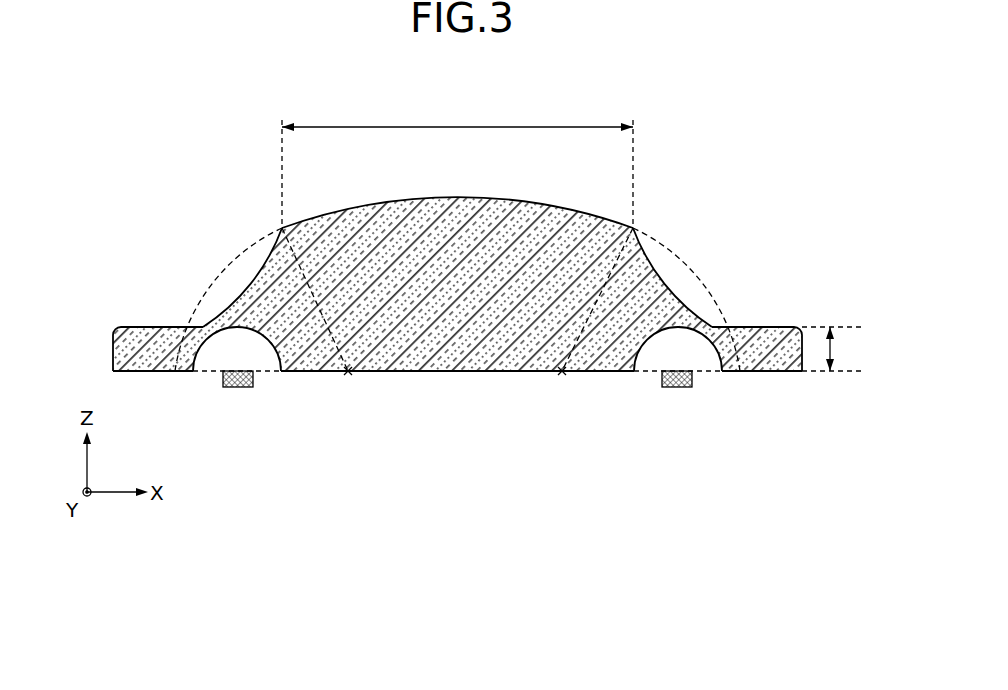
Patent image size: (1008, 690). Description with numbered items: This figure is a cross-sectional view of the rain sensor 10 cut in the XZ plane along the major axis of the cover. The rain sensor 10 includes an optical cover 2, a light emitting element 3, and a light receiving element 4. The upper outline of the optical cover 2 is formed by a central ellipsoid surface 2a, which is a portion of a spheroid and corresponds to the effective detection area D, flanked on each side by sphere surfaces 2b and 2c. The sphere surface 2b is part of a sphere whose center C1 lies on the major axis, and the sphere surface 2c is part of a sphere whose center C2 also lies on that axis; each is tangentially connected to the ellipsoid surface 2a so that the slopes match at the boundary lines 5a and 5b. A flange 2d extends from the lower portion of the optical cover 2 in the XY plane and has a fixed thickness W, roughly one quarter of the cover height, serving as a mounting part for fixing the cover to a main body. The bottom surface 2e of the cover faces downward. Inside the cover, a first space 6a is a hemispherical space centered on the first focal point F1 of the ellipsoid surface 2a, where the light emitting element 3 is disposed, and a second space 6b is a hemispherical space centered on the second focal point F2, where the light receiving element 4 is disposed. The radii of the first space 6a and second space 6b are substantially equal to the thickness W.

The rain sensor 10 is at (197, 154).
The optical cover 2 is at (460, 298).
The ellipsoid surface 2a is at (355, 208).
The sphere surface 2b is at (228, 273).
The sphere surface 2c is at (685, 280).
The flange 2d is at (773, 328).
The bottom surface of lens 2e is at (455, 372).
The light emitting element 3 is at (230, 389).
The light receiving element 4 is at (677, 389).
The boundary line 5a is at (278, 224).
The boundary line 5b is at (637, 225).
The first space 6a is at (212, 375).
The second space 6b is at (705, 374).
The center C1 is at (358, 382).
The center C2 is at (557, 382).
The first focal point F1 is at (253, 390).
The second focal point F2 is at (668, 390).
The effective detection area D is at (457, 164).
The thickness W is at (832, 349).